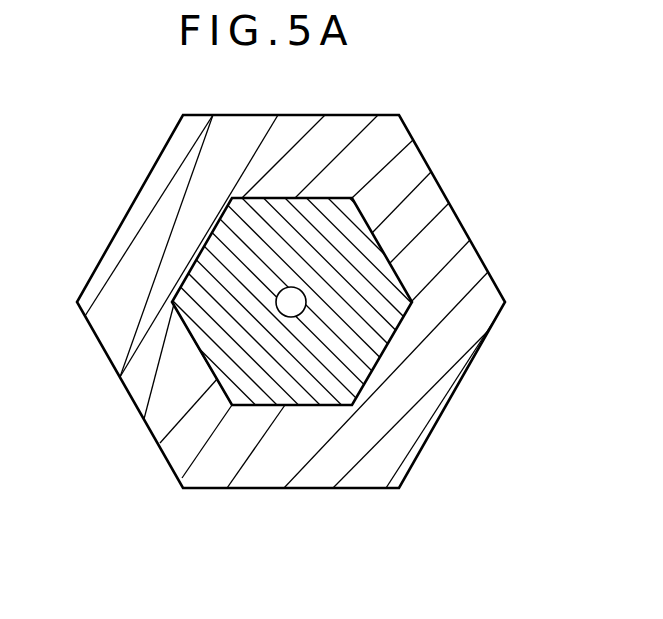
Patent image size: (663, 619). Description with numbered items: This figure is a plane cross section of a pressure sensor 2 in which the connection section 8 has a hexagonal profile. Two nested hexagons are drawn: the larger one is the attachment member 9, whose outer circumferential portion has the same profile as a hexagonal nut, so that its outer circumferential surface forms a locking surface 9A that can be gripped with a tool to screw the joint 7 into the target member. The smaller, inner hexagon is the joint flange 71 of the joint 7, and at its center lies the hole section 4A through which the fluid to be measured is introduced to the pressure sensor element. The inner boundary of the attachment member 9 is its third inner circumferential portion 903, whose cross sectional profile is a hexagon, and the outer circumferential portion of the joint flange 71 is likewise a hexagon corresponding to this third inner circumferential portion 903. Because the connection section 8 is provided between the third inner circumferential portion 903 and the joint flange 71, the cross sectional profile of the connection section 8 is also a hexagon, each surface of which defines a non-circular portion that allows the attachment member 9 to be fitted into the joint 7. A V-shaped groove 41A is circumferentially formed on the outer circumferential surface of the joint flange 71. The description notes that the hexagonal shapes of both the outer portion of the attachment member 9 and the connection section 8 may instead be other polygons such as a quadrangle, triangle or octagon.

The pressure sensor 2 is at (466, 113).
The attachment member 9 is at (130, 150).
The locking surface 9A is at (303, 118).
The hole section 4A is at (298, 289).
The connection section 8 is at (188, 314).
The joint 7 is at (399, 340).
The joint flange 71 is at (198, 273).
The third inner circumferential portion 903 is at (204, 358).
The V-shaped groove 41A is at (217, 378).